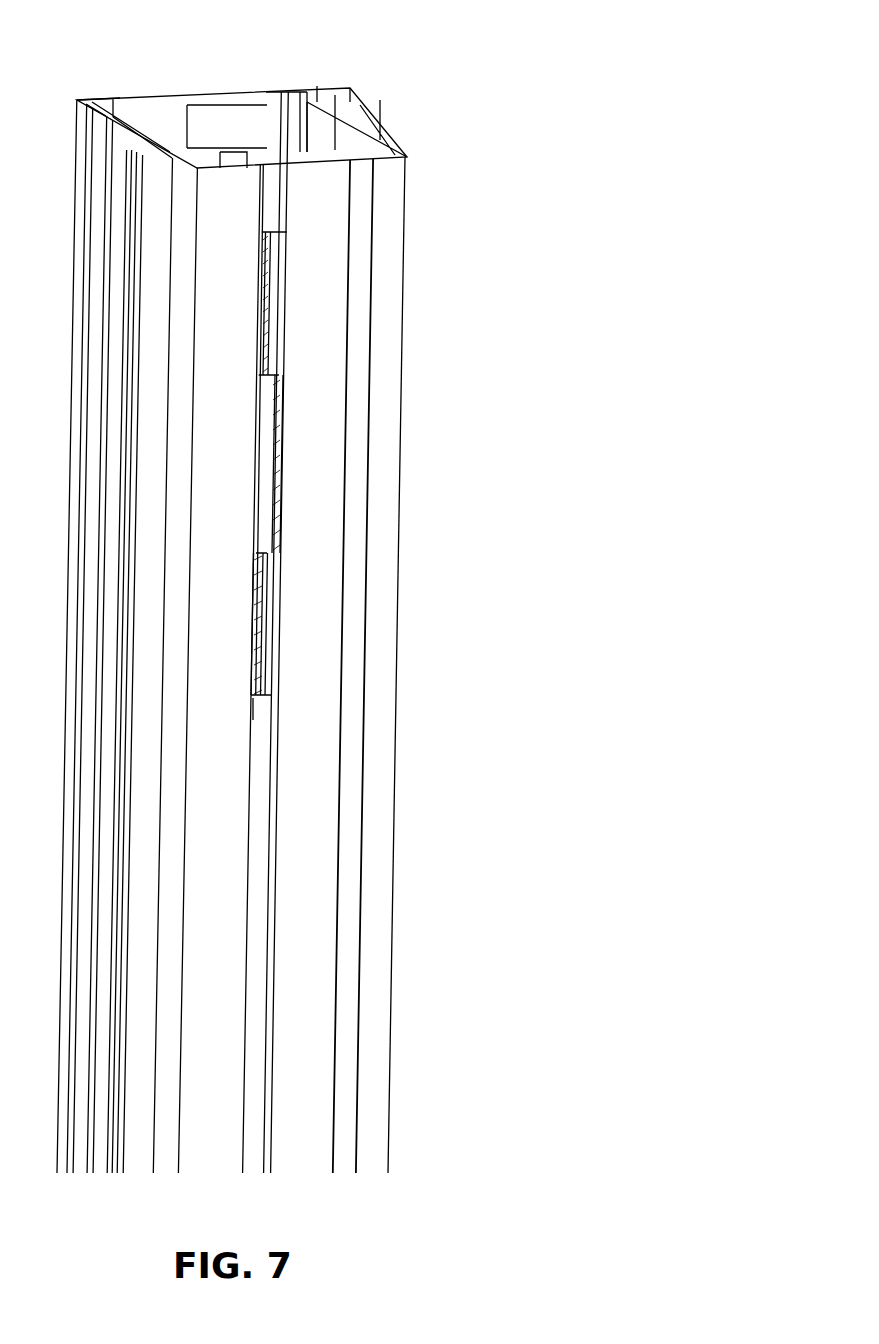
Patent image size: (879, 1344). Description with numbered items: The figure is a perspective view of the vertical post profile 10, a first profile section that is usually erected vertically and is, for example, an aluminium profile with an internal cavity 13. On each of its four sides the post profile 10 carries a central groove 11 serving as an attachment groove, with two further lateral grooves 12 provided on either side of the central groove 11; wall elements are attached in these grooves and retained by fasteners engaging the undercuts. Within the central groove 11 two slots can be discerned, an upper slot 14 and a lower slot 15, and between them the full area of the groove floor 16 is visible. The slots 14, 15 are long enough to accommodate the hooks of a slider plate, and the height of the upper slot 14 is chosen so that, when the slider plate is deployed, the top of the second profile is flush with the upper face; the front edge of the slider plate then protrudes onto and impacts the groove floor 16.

The vertical post profile 10 is at (425, 91).
The central groove 11 is at (211, 97).
The lateral groove 12 is at (358, 203).
The internal cavity 13 is at (203, 122).
The upper slot 14 is at (270, 317).
The slot 15 is at (265, 630).
The groove floor 16 is at (268, 455).